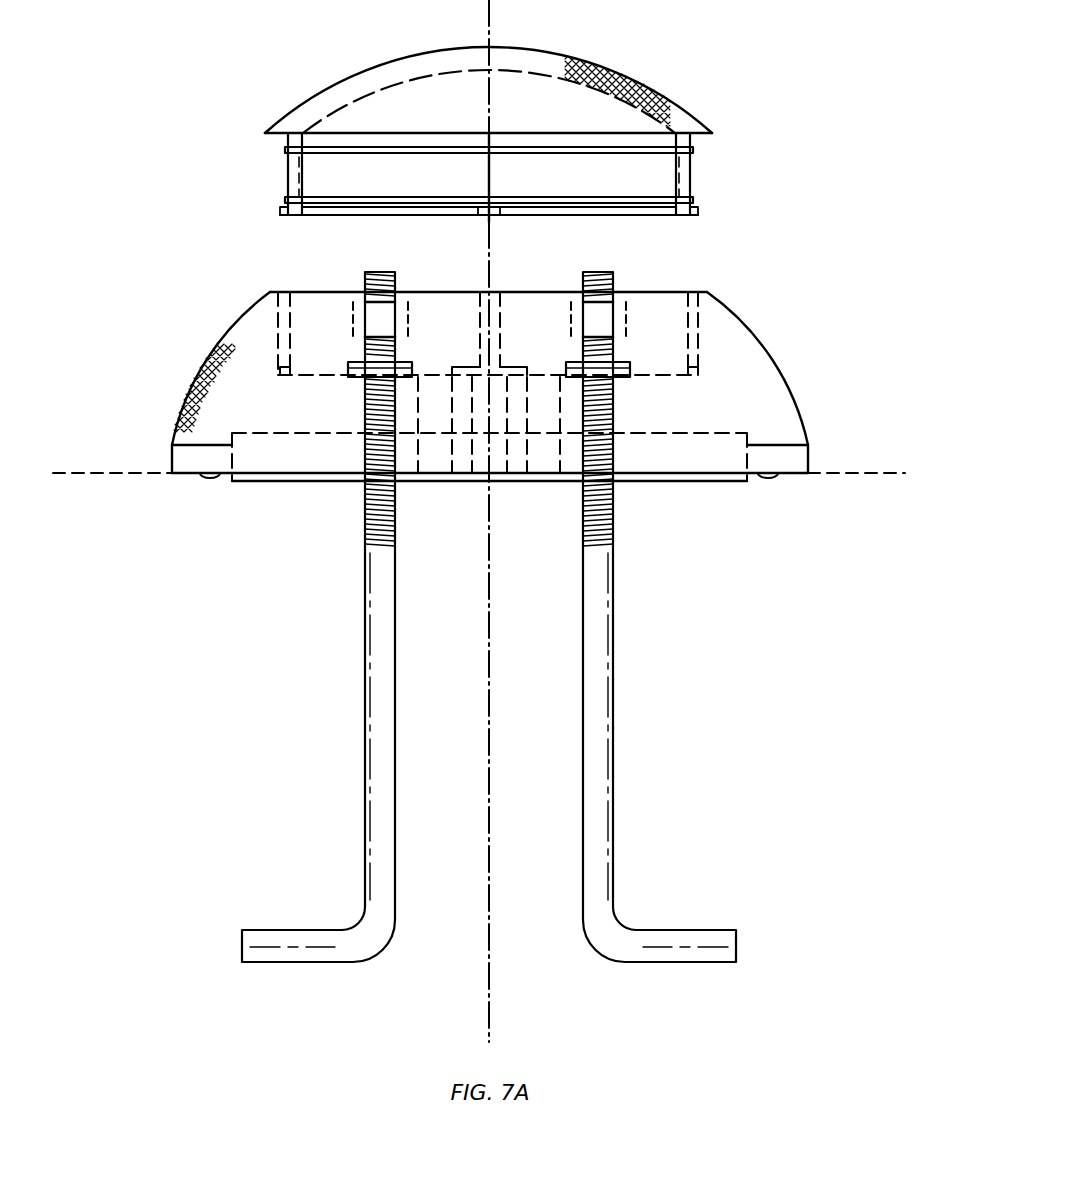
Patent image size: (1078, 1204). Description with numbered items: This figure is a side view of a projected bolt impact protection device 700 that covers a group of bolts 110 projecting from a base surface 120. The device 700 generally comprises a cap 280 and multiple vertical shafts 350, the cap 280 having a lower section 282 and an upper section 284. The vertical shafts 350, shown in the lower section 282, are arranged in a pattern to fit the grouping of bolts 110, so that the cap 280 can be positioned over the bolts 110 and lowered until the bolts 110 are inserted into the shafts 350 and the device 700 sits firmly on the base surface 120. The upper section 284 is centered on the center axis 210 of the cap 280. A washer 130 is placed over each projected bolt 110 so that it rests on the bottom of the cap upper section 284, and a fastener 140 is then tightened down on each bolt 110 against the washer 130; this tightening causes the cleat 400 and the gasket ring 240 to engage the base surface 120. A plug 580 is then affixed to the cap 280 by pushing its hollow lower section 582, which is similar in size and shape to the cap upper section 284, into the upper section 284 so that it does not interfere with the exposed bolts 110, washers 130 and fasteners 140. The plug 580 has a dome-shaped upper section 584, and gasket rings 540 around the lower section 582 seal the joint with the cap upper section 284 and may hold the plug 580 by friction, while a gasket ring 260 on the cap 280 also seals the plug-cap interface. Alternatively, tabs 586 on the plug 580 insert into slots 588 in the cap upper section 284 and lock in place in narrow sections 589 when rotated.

The bolt 110 is at (362, 672).
The base surface 120 is at (135, 473).
The washer 130 is at (348, 368).
The fastener 140 is at (408, 310).
The center axis 210 is at (493, 18).
The gasket ring 240 is at (200, 478).
The gasket ring 260 is at (270, 292).
The cap 280 is at (521, 365).
The lower section 282 is at (778, 410).
The upper section 284 is at (280, 320).
The vertical shaft 350 is at (365, 392).
The cleat 400 is at (460, 482).
The gasket ring 540 is at (285, 149).
The plug 580 is at (488, 146).
The lower section 582 is at (700, 168).
The upper section 584 is at (341, 82).
The tab 586 is at (280, 212).
The slot 588 is at (280, 345).
The narrow section 589 is at (285, 375).
The projected bolt impact protection device 700 is at (479, 571).